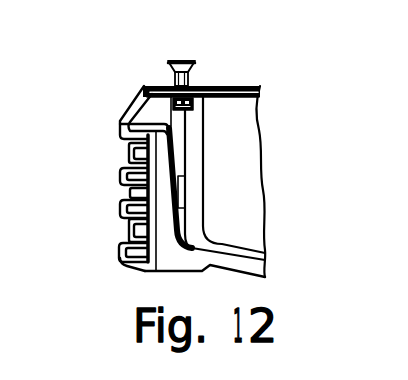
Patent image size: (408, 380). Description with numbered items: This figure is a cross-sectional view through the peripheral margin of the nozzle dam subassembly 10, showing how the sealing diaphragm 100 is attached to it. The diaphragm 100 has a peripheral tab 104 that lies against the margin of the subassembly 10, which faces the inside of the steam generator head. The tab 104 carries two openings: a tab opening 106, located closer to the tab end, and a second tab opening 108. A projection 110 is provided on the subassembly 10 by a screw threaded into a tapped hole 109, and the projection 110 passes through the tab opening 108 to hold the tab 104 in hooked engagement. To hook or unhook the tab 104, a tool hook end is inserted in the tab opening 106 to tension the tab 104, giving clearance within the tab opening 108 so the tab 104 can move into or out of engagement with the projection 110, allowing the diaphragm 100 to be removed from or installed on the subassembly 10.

The nozzle dam subassembly 10 is at (250, 207).
The sealing diaphragm 100 is at (118, 122).
The peripheral tab 104 is at (242, 85).
The tab opening 106 is at (208, 98).
The tab opening 108 is at (171, 72).
The tapped hole 109 is at (193, 102).
The projection 110 is at (193, 70).